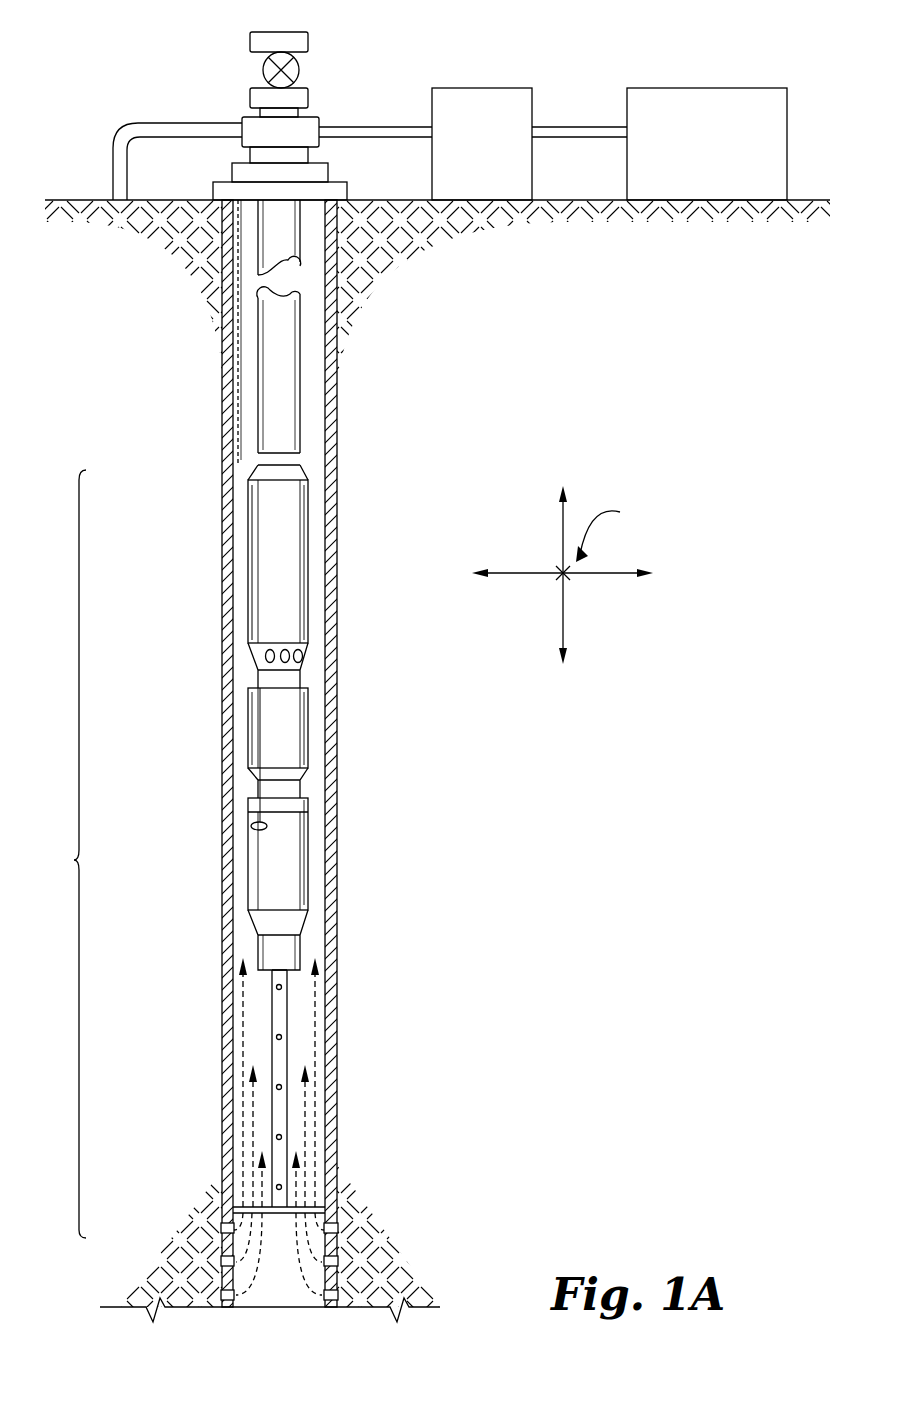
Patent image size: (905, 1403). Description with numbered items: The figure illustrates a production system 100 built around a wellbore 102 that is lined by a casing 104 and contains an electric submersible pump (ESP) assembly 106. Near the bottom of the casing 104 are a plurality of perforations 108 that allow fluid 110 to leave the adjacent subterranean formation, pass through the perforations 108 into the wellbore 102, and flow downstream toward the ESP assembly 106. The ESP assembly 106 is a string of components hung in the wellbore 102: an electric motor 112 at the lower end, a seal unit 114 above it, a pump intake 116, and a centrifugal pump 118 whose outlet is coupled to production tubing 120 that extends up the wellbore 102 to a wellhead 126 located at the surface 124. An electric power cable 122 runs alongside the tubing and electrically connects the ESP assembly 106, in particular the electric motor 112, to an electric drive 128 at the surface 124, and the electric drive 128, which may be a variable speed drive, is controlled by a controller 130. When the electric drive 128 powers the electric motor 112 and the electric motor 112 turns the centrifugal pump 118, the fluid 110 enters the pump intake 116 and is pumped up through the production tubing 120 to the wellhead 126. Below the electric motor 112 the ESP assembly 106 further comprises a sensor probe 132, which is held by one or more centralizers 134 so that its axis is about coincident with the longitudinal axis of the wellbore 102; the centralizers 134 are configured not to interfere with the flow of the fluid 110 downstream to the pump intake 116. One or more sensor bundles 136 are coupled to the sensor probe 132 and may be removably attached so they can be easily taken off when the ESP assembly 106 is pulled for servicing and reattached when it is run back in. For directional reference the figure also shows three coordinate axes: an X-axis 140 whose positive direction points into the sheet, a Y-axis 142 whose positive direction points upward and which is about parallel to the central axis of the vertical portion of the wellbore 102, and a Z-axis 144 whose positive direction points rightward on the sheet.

The production system 100 is at (722, 350).
The wellbore 102 is at (311, 322).
The casing 104 is at (222, 510).
The electric submersible pump (ESP) assembly 106 is at (59, 854).
The perforations 108 is at (222, 1228).
The fluid 110 is at (315, 1140).
The electric motor 112 is at (283, 850).
The seal unit 114 is at (283, 725).
The pump intake 116 is at (283, 677).
The centrifugal pump 118 is at (283, 553).
The production tubing 120 is at (277, 400).
The electric power cable 122 is at (252, 433).
The surface 124 is at (82, 198).
The wellhead 126 is at (263, 68).
The electric drive 128 is at (486, 87).
The controller 130 is at (705, 87).
The sensor probe 132 is at (280, 1003).
The centralizers 134 is at (277, 1213).
The sensor bundles 136 is at (282, 1037).
The X-axis 140 is at (647, 505).
The Y-axis 142 is at (562, 433).
The Z-axis 144 is at (707, 590).